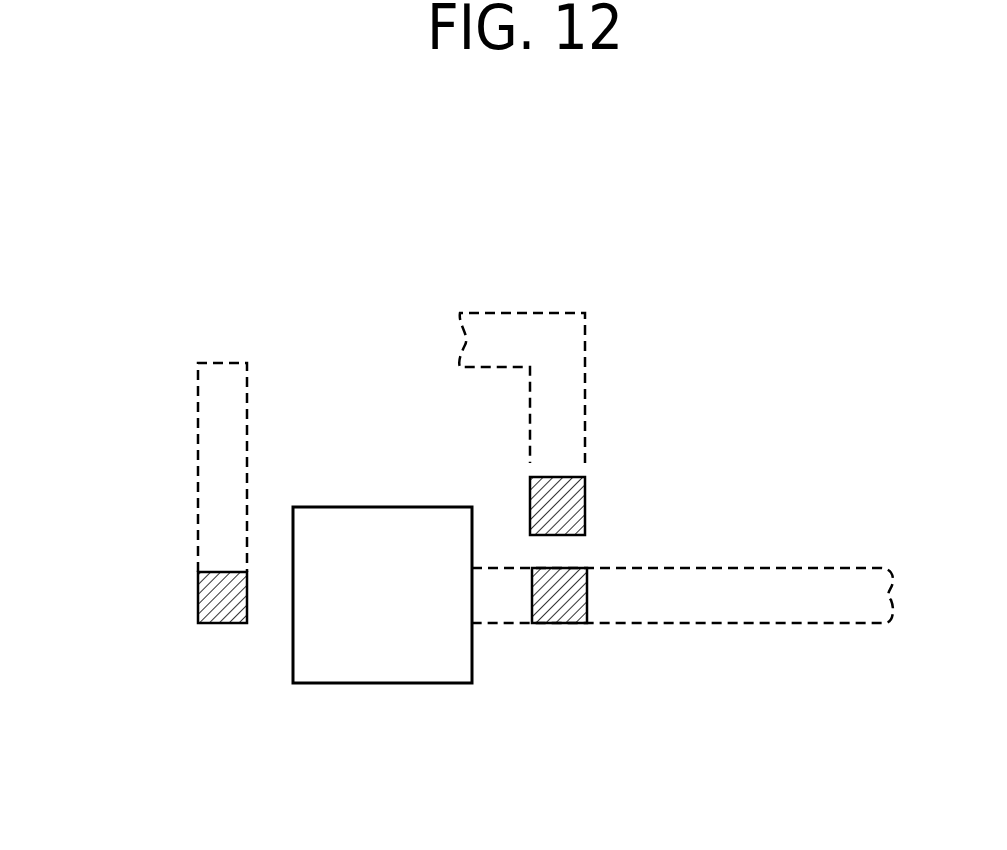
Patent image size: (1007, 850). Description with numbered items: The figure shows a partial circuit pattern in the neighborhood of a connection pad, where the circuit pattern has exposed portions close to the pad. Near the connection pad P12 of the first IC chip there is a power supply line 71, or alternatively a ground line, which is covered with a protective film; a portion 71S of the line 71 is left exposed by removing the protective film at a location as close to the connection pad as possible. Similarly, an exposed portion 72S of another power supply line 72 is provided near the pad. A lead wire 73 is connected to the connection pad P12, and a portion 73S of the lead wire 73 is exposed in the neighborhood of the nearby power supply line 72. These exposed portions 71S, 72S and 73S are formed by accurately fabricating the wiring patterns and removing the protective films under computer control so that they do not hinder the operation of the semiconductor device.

The connection pad P12 is at (380, 688).
The power supply line 71 is at (220, 433).
The exposed portion 71S is at (210, 623).
The power supply line 72 is at (577, 355).
The exposed portion 72S is at (585, 510).
The lead wire 73 is at (755, 617).
The exposed portion 73S is at (554, 623).